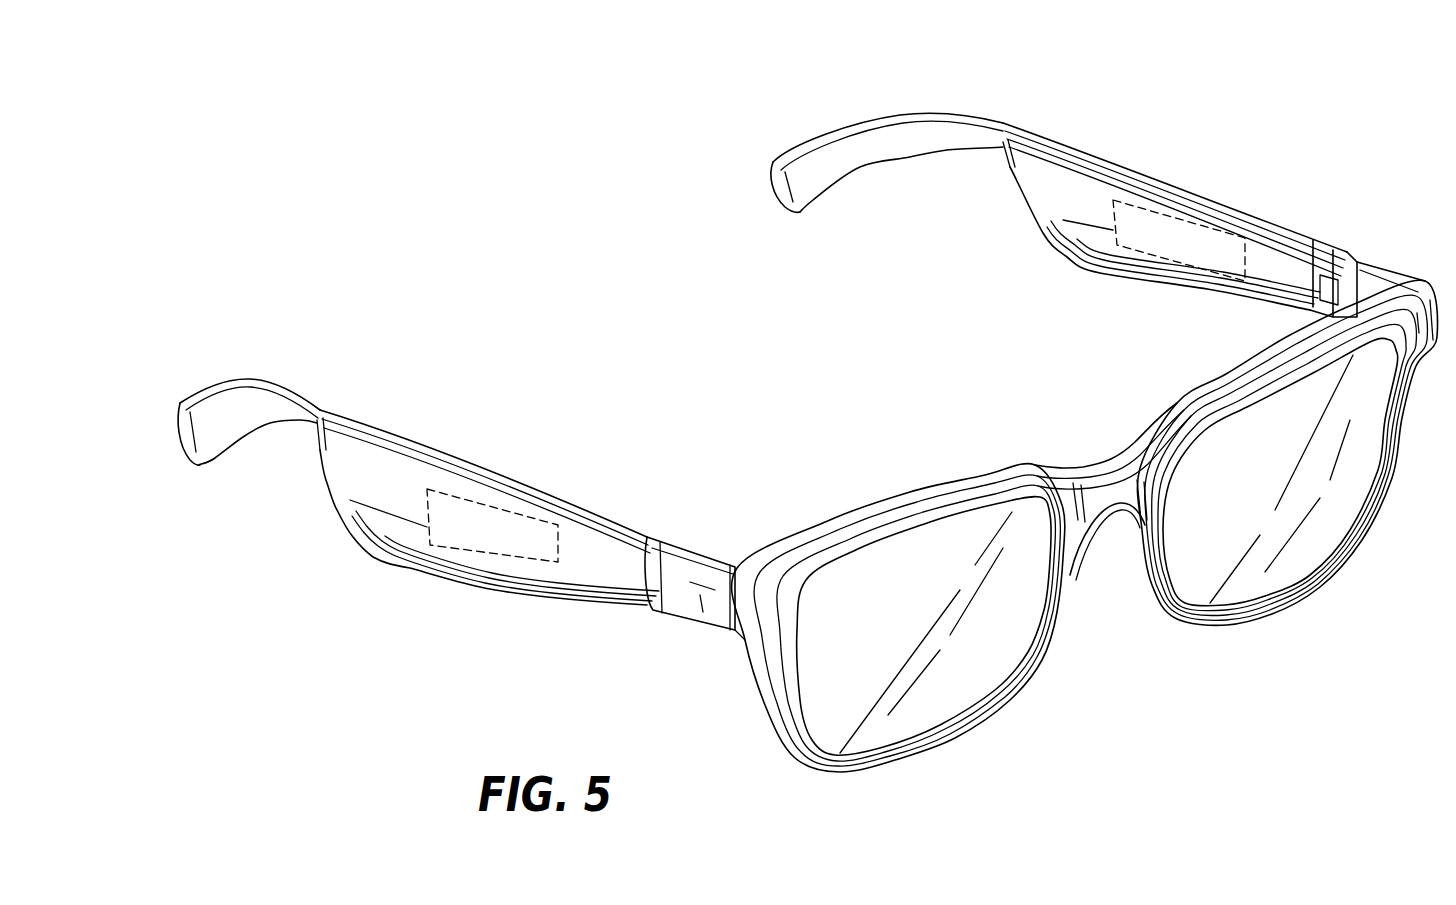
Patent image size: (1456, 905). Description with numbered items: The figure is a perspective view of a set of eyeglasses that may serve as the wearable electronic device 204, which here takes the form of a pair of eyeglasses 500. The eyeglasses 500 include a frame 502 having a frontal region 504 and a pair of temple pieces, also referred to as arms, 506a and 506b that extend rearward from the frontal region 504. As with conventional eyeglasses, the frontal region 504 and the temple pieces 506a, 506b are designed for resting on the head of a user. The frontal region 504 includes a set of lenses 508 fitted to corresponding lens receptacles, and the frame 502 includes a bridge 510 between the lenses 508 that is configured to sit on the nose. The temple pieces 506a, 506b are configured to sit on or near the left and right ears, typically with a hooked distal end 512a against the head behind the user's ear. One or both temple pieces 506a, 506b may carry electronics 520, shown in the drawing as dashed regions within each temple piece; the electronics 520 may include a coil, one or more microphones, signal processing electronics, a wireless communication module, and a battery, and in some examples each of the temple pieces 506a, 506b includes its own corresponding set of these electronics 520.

The wearable electronic device 204 is at (753, 412).
The eyeglasses 500 is at (518, 150).
The frame 502 is at (1168, 370).
The frontal region 504 is at (1298, 654).
The temple piece 506a is at (1231, 168).
The temple piece 506b is at (444, 440).
The lenses 508 is at (938, 687).
The bridge 510 is at (1110, 497).
The distal end 512a is at (190, 364).
The electronics 520 is at (517, 543).